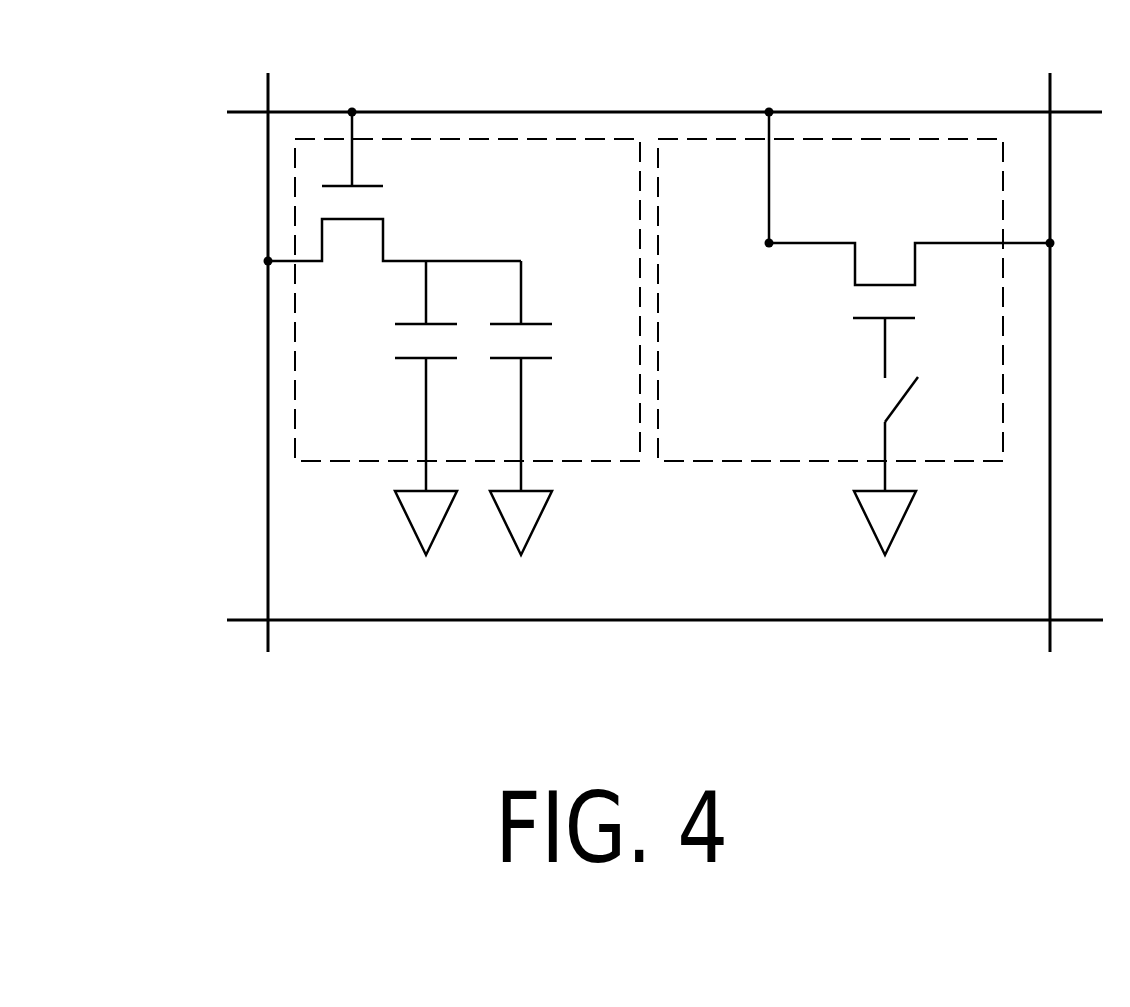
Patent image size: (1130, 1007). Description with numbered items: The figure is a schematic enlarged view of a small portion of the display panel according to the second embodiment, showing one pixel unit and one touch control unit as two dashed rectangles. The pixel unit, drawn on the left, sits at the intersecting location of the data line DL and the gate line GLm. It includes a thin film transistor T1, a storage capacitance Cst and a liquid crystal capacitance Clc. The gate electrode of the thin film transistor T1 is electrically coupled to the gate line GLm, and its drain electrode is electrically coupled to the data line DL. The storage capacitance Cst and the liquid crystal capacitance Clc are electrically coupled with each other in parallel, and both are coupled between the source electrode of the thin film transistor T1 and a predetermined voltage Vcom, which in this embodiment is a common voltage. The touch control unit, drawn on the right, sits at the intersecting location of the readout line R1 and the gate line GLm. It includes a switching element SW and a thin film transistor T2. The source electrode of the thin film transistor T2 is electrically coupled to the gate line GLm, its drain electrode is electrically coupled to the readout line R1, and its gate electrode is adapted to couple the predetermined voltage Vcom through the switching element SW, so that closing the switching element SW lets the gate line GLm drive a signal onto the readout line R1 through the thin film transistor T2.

The data line DL is at (270, 332).
The gate line GLm is at (603, 113).
The readout line R1 is at (1042, 391).
The thin film transistor T1 is at (393, 187).
The thin film transistor T2 is at (910, 213).
The liquid crystal capacitance Clc is at (387, 376).
The storage capacitance Cst is at (559, 376).
The switching element SW is at (856, 404).
The predetermined voltage Vcom is at (653, 548).